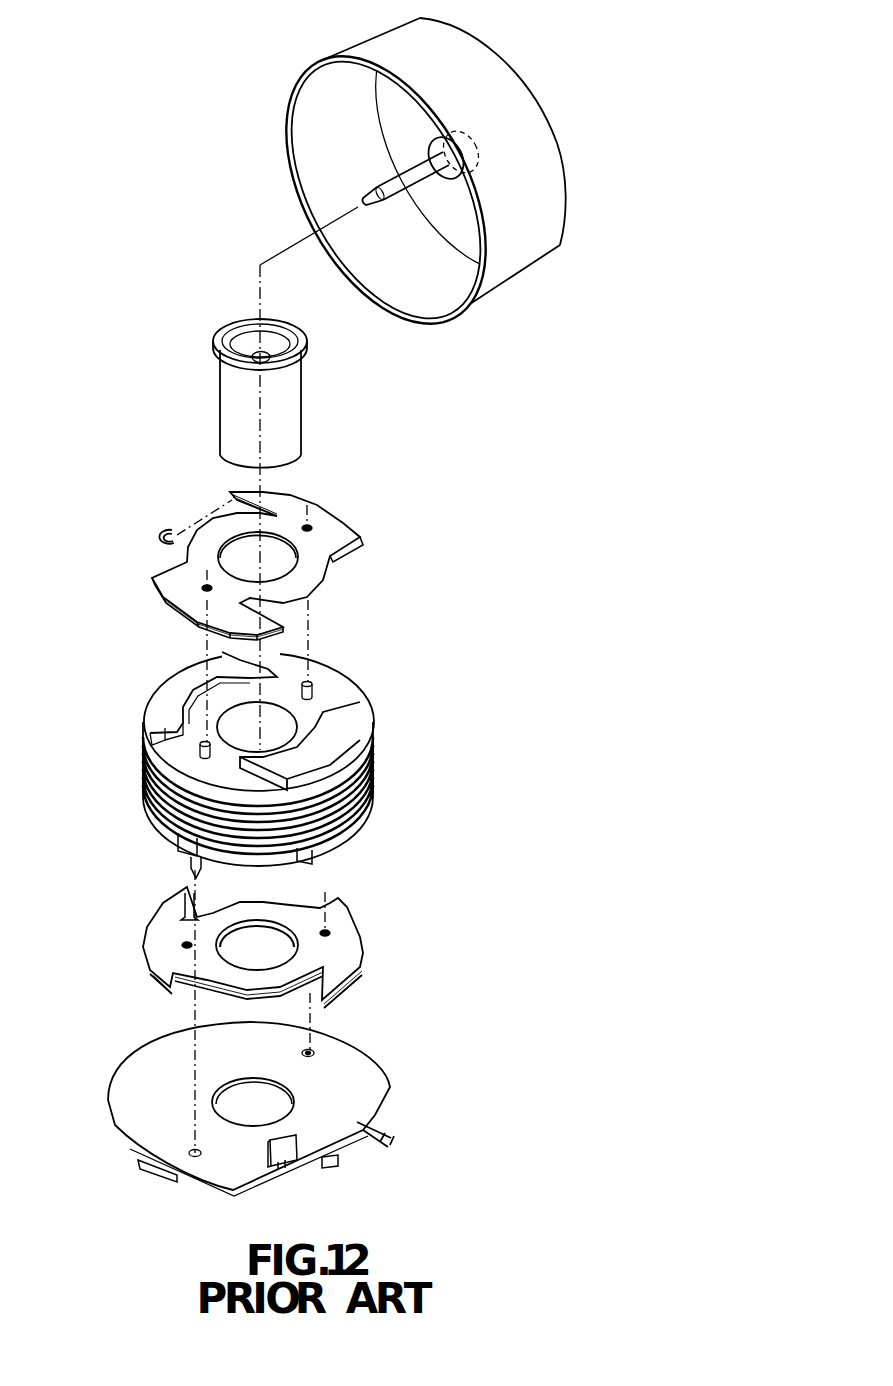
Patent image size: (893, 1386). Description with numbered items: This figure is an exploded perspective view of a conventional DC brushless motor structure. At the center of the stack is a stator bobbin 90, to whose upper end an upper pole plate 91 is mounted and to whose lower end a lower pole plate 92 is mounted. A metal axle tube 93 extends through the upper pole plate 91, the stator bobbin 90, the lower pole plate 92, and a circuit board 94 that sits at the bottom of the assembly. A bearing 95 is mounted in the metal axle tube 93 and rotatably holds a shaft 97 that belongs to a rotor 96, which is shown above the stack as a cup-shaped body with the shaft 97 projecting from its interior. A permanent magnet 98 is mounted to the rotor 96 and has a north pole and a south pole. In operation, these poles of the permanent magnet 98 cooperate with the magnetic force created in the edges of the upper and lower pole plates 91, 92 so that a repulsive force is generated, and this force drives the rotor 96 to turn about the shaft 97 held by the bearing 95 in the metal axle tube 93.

The stator bobbin 90 is at (345, 693).
The upper pole plate 91 is at (342, 523).
The lower pole plate 92 is at (358, 930).
The metal axle tube 93 is at (230, 430).
The circuit board 94 is at (362, 1068).
The bearing 95 is at (245, 347).
The rotor 96 is at (510, 267).
The shaft 97 is at (389, 300).
The permanent magnet 98 is at (311, 159).